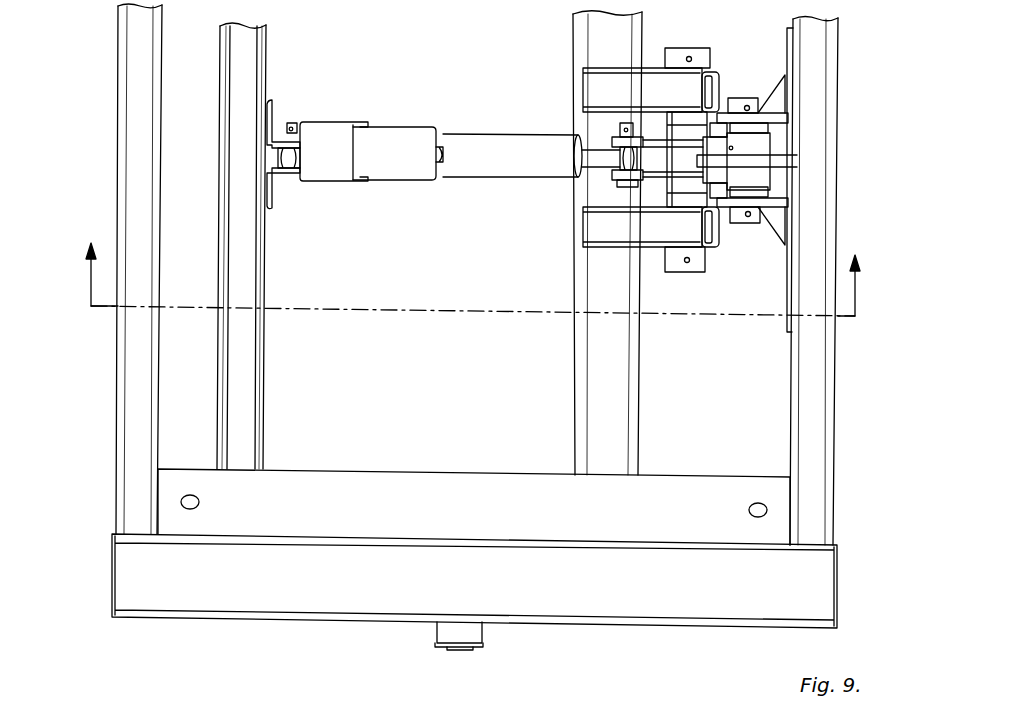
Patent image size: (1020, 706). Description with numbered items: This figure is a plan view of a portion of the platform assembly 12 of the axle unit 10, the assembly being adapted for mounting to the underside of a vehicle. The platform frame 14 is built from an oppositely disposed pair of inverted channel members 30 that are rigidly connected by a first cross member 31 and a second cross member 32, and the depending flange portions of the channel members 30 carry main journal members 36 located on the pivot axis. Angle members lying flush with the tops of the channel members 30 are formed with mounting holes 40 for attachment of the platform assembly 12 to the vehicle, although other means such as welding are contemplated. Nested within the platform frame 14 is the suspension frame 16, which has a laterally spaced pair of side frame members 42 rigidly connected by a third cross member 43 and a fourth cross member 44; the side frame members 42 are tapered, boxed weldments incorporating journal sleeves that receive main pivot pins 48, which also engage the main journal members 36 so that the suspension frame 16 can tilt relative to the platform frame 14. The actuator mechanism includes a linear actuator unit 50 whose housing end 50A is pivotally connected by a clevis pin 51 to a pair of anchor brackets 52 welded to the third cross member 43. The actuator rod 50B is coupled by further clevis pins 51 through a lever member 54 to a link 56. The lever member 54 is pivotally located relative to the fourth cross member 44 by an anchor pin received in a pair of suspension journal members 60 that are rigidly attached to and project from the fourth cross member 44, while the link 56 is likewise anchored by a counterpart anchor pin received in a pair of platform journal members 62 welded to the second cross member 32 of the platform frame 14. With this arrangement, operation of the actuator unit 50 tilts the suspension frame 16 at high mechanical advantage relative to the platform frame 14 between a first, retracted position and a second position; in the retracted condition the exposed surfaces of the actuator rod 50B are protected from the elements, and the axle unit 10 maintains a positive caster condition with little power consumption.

The axle unit 10 is at (475, 264).
The platform assembly 12 is at (498, 354).
The platform frame 14 is at (498, 338).
The suspension frame 16 is at (478, 338).
The inverted channel members 30 is at (310, 586).
The first cross member 31 is at (162, 183).
The second cross member 32 is at (792, 345).
The main journal members 36 is at (483, 633).
The mounting holes 40 is at (199, 500).
The side frame members 42 is at (350, 512).
The third cross member 43 is at (220, 73).
The fourth cross member 44 is at (573, 268).
The main pivot pins 48 is at (447, 649).
The linear actuator unit 50 is at (460, 153).
The housing end 50A is at (301, 122).
The actuator rod 50B is at (583, 146).
The clevis pin 51 is at (283, 174).
The anchor brackets 52 is at (272, 106).
The lever member 54 is at (650, 180).
The link 56 is at (772, 158).
The suspension journal members 60 is at (712, 72).
The platform journal members 62 is at (740, 98).